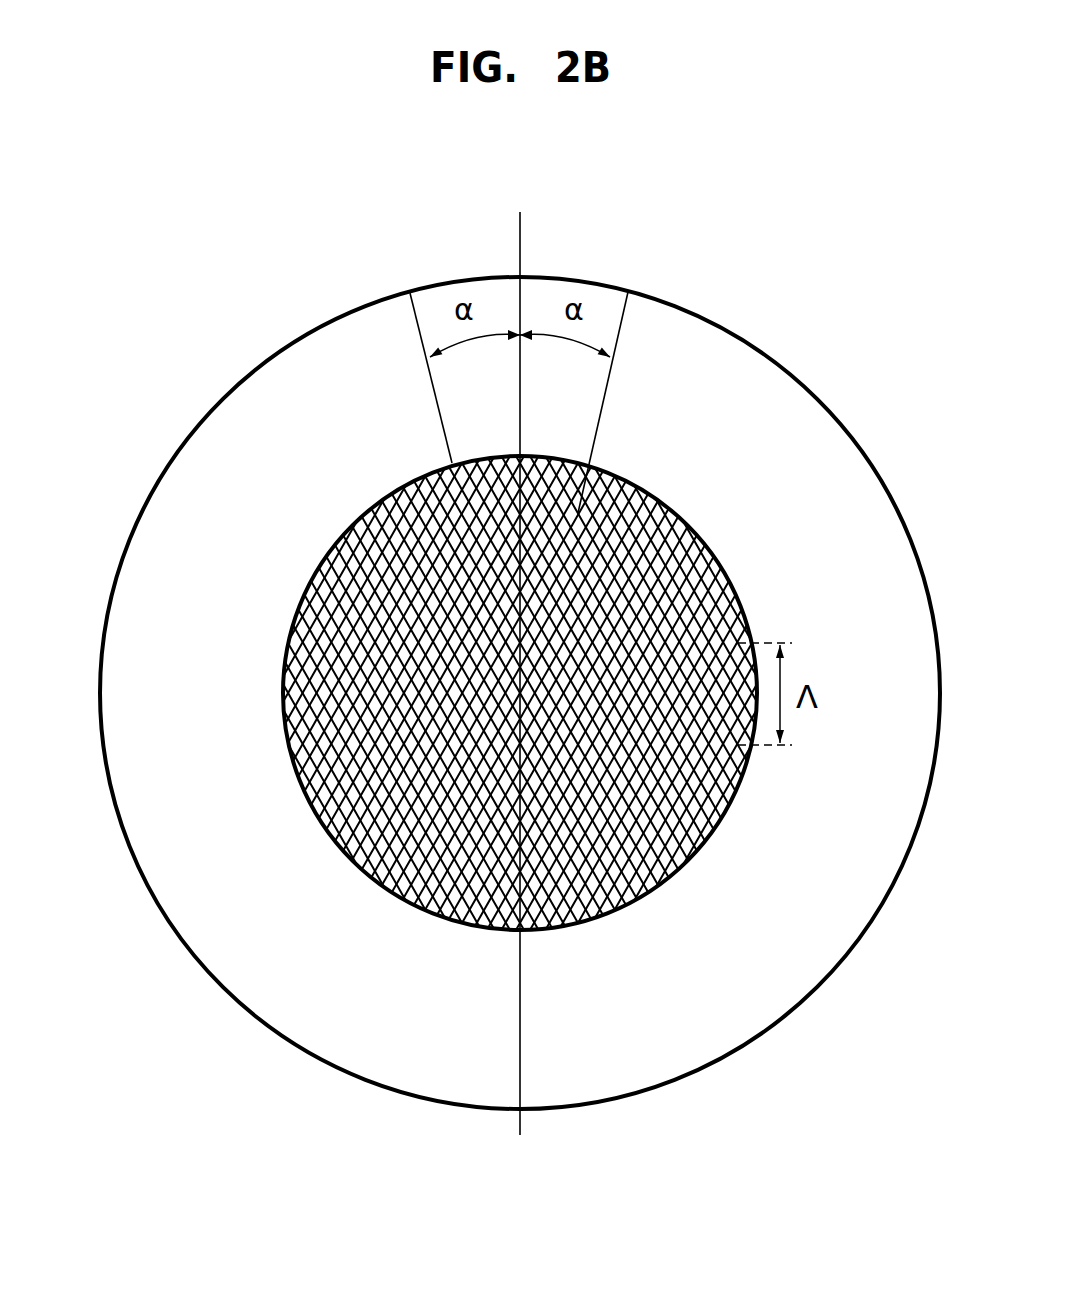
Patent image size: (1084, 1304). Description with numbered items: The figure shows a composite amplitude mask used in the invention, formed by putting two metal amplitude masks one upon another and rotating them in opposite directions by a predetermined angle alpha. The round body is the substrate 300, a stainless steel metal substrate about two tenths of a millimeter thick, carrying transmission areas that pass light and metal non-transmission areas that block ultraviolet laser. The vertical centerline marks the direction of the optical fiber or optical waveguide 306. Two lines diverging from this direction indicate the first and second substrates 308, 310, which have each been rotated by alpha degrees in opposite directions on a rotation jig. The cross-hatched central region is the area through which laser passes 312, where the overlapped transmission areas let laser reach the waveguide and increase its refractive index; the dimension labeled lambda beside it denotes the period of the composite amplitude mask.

The metal substrate 300 is at (757, 353).
The direction of optical fiber or optical waveguide 306 is at (523, 232).
The first substrate 308 is at (630, 307).
The second substrate 310 is at (413, 318).
The area through which laser passes 312 is at (608, 492).